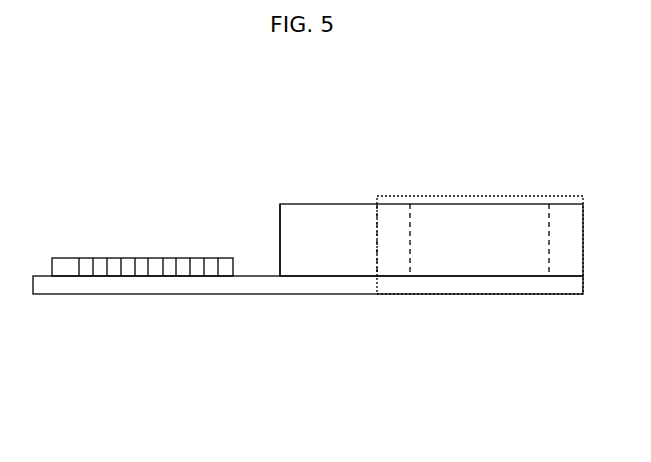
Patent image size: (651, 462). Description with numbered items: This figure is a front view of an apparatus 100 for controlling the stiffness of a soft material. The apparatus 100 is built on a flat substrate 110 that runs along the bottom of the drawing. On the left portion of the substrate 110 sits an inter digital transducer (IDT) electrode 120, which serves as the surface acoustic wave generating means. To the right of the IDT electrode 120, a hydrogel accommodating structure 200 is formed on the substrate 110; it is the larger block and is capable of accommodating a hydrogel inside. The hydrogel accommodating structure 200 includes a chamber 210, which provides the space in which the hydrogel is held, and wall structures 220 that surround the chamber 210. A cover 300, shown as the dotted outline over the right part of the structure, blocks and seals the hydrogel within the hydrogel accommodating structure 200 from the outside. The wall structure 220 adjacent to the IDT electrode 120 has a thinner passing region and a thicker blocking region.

The apparatus of controlling a stiffness of a soft material 100 is at (562, 157).
The substrate 110 is at (278, 298).
The inter digital transducer (IDT) electrode 120 is at (143, 275).
The hydrogel accommodating structure 200 is at (385, 362).
The chamber 210 is at (478, 248).
The wall structures 220 is at (350, 257).
The cover 300 is at (472, 212).